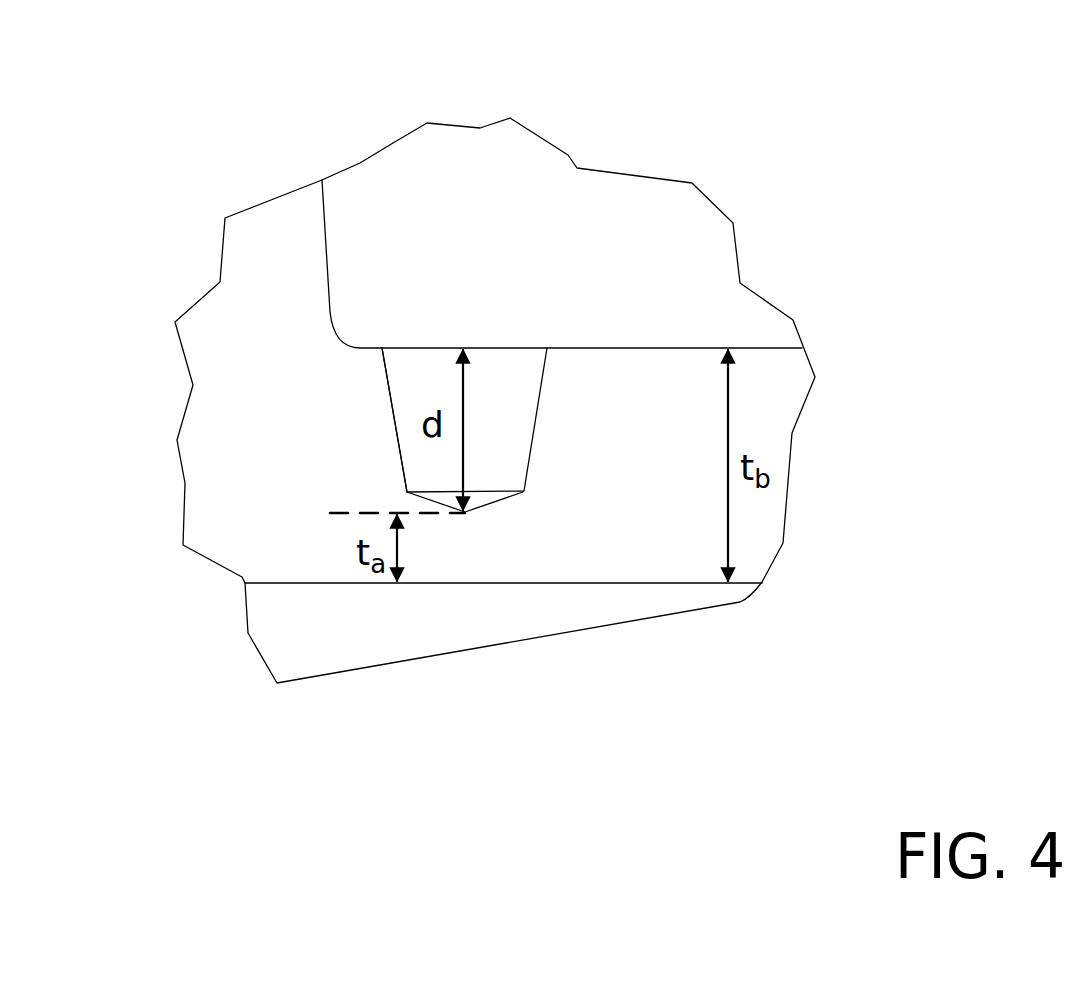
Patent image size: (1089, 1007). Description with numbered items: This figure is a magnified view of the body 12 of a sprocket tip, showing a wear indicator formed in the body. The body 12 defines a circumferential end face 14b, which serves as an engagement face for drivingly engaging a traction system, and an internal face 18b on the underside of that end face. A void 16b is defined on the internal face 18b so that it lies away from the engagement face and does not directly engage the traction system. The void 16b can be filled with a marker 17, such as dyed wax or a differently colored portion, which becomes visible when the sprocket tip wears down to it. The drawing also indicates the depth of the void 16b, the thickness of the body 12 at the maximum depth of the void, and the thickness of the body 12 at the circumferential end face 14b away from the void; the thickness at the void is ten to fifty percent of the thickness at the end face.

The body 12 is at (668, 538).
The circumferential end face 14b is at (518, 580).
The void 16b is at (508, 388).
The marker 17 is at (407, 377).
The internal face 18b is at (635, 348).